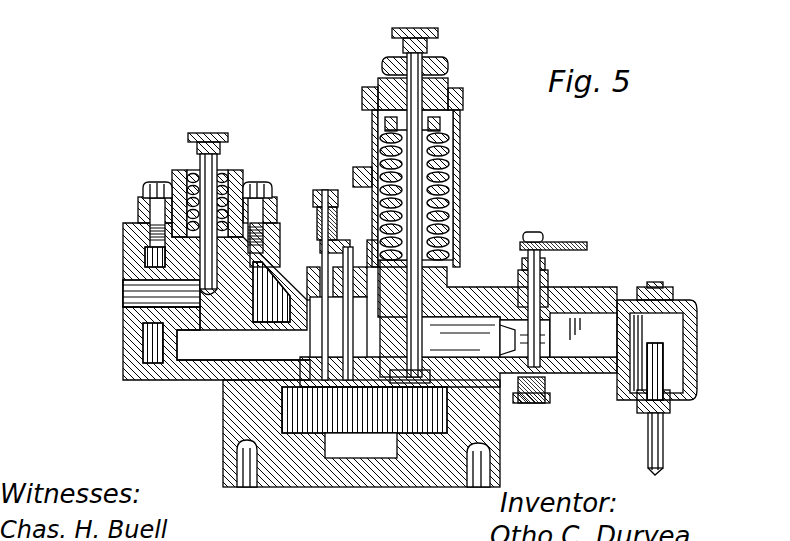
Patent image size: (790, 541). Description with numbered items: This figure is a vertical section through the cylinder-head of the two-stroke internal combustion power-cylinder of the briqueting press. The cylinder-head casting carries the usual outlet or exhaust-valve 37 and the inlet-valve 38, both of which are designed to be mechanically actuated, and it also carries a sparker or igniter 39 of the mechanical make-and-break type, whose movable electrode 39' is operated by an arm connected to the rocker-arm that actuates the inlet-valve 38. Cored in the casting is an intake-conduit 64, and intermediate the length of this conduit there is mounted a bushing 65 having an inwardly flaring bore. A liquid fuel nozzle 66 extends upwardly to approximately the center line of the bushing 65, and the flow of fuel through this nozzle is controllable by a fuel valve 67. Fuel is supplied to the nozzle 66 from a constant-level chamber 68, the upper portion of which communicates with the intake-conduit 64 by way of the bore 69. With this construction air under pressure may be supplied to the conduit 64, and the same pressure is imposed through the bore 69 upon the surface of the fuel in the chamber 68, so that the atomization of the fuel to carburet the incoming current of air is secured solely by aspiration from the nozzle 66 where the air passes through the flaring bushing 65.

The exhaust-valve 37 is at (140, 195).
The inlet-valve 38 is at (455, 245).
The sparker 39 is at (323, 269).
The movable electrode 39' is at (279, 257).
The intake-conduit 64 is at (460, 338).
The bushing 65 is at (540, 320).
The liquid fuel nozzle 66 is at (552, 395).
The fuel valve 67 is at (541, 236).
The constant-level chamber 68 is at (672, 337).
The bore 69 is at (615, 318).